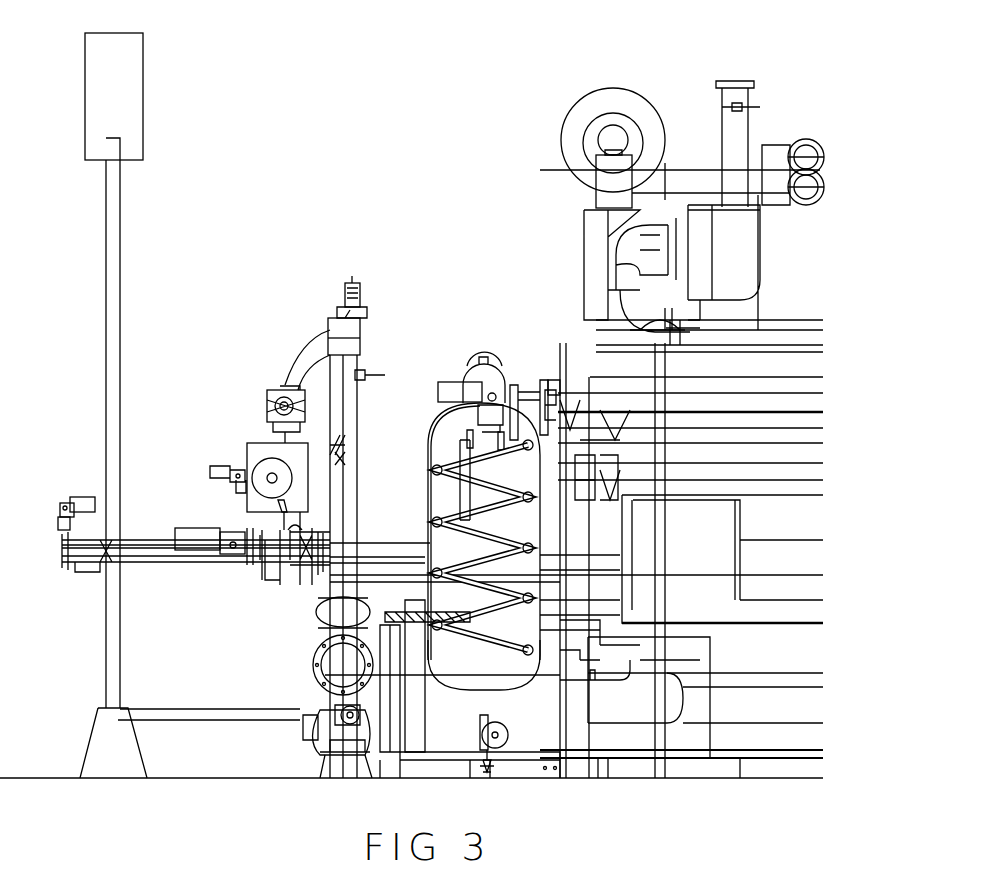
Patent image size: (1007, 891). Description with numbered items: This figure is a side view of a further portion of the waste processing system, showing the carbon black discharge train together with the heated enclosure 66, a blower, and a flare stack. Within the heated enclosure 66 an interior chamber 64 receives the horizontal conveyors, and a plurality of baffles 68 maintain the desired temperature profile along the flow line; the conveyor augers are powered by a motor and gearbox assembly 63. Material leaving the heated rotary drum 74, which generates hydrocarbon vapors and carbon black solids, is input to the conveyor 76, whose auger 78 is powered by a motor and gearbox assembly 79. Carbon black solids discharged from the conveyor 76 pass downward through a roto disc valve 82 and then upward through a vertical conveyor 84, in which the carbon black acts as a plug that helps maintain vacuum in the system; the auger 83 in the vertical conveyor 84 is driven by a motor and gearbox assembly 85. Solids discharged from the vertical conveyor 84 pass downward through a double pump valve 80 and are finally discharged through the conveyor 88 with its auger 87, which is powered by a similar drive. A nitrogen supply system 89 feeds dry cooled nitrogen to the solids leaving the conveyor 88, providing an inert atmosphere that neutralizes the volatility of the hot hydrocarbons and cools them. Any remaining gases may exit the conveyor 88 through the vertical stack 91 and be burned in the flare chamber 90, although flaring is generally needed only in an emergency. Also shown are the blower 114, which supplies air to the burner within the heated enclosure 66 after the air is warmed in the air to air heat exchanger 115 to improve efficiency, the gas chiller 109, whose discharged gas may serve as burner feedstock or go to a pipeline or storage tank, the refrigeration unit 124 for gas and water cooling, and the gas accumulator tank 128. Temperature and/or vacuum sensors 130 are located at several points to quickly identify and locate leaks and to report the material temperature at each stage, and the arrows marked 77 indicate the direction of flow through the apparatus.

The motor and gearbox assembly 63 is at (440, 384).
The interior chamber 64 is at (693, 645).
The heated enclosure 66 is at (772, 363).
The baffles 68 is at (788, 413).
The rotary drum 74 is at (750, 607).
The conveyor 76 is at (400, 548).
The flow path 77 is at (738, 735).
The auger 78 is at (302, 571).
The motor and gearbox assembly 79 is at (198, 549).
The double pump valve 80 is at (272, 392).
The roto disc valve 82 is at (320, 619).
The auger 83 is at (352, 453).
The vertical conveyor 84 is at (351, 548).
The motor and gearbox assembly 85 is at (358, 300).
The auger 87 is at (108, 567).
The conveyor 88 is at (143, 549).
The nitrogen supply system 89 is at (100, 497).
The flare chamber 90 is at (133, 131).
The vertical stack 91 is at (118, 299).
The gas chiller 109 is at (442, 652).
The blower 114 is at (640, 118).
The air to air heat exchanger 115 is at (780, 157).
The refrigeration unit 124 is at (707, 737).
The gas accumulator tank 128 is at (602, 738).
The temperature and/or vacuum sensors 130 is at (302, 535).